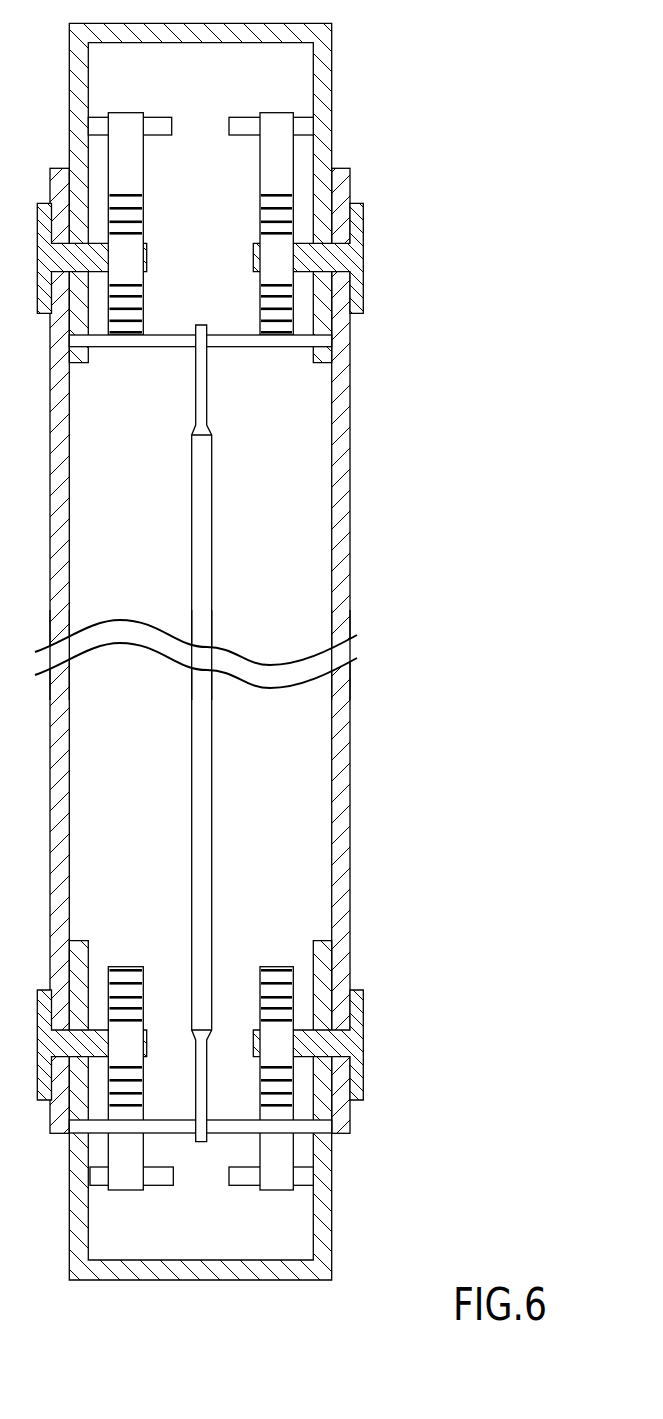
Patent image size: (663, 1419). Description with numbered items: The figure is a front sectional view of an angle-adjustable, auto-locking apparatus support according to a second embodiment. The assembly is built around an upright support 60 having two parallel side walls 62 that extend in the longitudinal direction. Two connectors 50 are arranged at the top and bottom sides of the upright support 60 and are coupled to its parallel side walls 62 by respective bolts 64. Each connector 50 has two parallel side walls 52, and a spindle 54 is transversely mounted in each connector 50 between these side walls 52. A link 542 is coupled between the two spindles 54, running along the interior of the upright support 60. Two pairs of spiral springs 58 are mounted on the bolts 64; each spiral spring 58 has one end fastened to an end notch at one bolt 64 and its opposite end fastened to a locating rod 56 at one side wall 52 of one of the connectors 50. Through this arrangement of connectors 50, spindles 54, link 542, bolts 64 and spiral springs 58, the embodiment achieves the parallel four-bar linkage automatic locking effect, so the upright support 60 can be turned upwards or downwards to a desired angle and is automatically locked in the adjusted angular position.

The connector 50 is at (292, 640).
The side wall 52 is at (323, 84).
The spindle 54 is at (300, 341).
The locating rod 56 is at (308, 127).
The spiral spring 58 is at (283, 203).
The upright support 60 is at (280, 650).
The side wall 62 is at (342, 465).
The bolt 64 is at (333, 258).
The link 542 is at (207, 570).